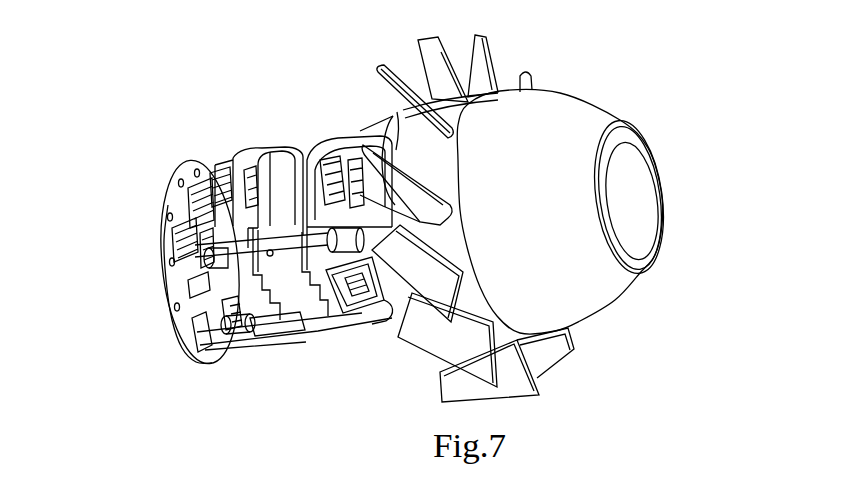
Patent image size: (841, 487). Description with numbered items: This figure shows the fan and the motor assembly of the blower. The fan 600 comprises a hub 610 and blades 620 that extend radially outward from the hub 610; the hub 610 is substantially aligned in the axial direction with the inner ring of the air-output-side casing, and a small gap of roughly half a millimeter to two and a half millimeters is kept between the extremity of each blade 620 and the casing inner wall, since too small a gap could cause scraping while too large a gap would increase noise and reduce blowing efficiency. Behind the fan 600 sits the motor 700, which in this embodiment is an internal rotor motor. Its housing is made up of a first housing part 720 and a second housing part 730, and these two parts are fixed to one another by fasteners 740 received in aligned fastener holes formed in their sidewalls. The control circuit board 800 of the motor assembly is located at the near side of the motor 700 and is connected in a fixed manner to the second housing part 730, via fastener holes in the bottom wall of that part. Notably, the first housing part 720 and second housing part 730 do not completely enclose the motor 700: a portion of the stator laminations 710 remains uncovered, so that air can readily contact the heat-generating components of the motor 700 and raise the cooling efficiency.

The fan 600 is at (585, 298).
The hub 610 is at (393, 130).
The blades 620 is at (490, 53).
The motor 700 is at (288, 170).
The stator laminations 710 is at (300, 312).
The first housing part 720 is at (347, 327).
The second housing part 730 is at (270, 330).
The fasteners 740 is at (270, 253).
The control circuit board 800 is at (163, 190).